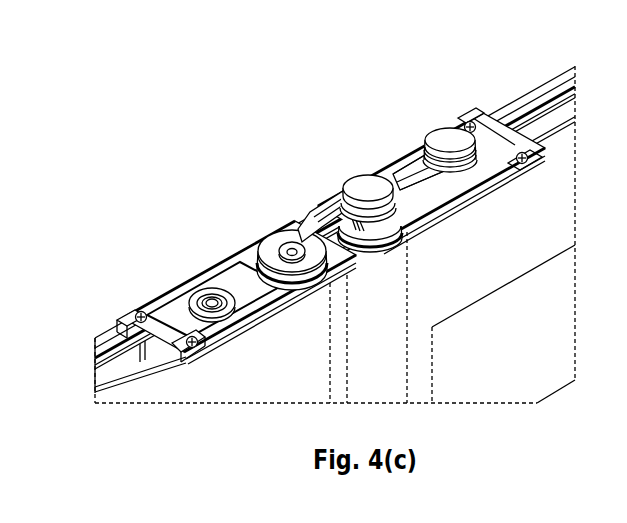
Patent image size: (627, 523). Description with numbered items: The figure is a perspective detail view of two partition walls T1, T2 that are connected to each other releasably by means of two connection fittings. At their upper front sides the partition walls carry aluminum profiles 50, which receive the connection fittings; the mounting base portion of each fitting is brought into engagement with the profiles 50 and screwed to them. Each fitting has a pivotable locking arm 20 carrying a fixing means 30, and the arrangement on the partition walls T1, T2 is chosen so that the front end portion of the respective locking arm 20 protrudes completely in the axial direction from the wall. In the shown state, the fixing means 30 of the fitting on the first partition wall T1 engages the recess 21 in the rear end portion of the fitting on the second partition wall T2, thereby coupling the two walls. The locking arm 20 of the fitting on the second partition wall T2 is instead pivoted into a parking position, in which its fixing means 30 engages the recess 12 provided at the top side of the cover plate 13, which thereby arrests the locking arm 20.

The recess 12 is at (208, 292).
The cover plate 13 is at (160, 311).
The locking arm 20 is at (316, 214).
The recess 21 is at (286, 243).
The fixing means 30 is at (335, 177).
The aluminum profile 50 is at (120, 385).
The first partition wall T1 is at (262, 372).
The second partition wall T2 is at (500, 362).